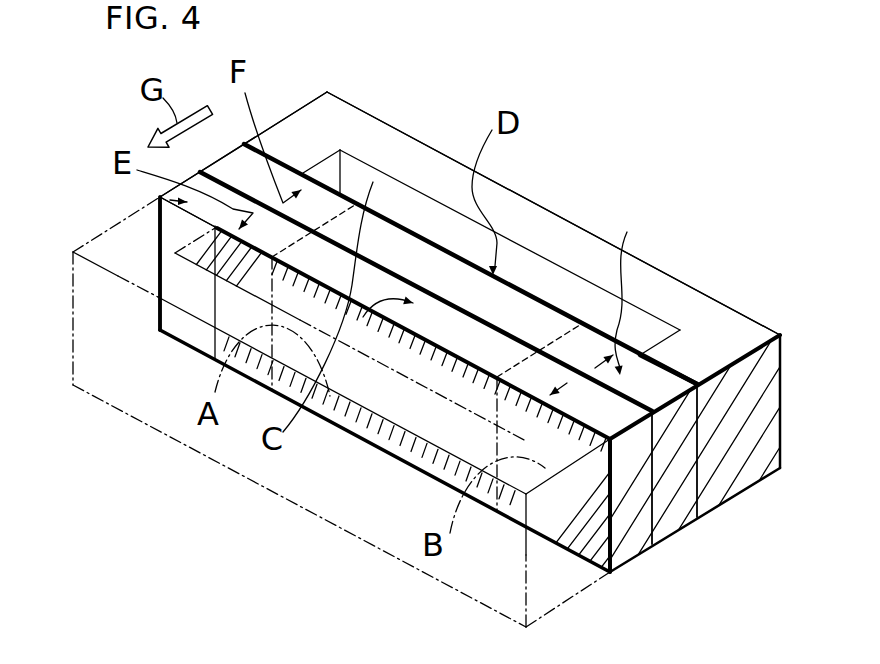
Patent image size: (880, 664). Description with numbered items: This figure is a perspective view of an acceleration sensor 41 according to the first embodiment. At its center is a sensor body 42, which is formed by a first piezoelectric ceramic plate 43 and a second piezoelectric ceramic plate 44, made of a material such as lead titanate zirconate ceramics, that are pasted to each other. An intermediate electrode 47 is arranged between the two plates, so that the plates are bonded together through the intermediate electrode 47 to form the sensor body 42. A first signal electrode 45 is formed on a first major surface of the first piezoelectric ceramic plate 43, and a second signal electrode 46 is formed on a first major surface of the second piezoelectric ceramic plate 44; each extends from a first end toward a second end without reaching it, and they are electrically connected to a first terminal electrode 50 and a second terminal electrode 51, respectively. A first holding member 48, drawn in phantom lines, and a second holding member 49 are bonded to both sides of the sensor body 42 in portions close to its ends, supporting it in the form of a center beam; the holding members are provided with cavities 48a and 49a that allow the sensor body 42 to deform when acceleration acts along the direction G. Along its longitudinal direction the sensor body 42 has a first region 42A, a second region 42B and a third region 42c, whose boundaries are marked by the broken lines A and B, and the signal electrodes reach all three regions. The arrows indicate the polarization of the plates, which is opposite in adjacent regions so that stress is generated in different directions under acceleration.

The acceleration sensor 41 is at (335, 73).
The sensor body 42 is at (497, 243).
The first region 42A is at (157, 198).
The second region 42B is at (515, 311).
The third region 42c is at (665, 328).
The first piezoelectric ceramic plate 43 is at (368, 215).
The second piezoelectric ceramic plate 44 is at (435, 287).
The first signal electrode 45 is at (358, 440).
The second signal electrode 46 is at (450, 262).
The intermediate electrode 47 is at (525, 343).
The first holding member 48 is at (76, 306).
The cavity 48a is at (193, 268).
The second holding member 49 is at (733, 305).
The cavity 49a is at (703, 293).
The first terminal electrode 50 is at (757, 432).
The second terminal electrode 51 is at (304, 104).